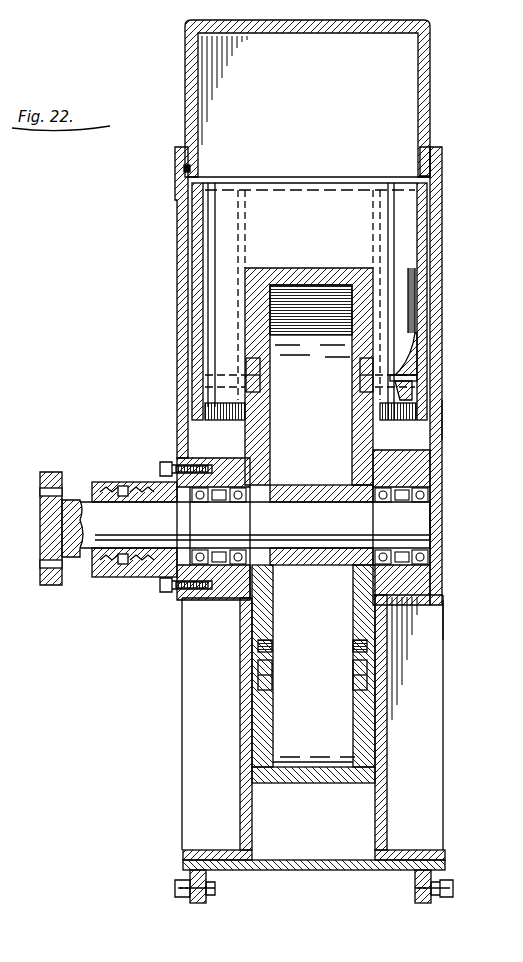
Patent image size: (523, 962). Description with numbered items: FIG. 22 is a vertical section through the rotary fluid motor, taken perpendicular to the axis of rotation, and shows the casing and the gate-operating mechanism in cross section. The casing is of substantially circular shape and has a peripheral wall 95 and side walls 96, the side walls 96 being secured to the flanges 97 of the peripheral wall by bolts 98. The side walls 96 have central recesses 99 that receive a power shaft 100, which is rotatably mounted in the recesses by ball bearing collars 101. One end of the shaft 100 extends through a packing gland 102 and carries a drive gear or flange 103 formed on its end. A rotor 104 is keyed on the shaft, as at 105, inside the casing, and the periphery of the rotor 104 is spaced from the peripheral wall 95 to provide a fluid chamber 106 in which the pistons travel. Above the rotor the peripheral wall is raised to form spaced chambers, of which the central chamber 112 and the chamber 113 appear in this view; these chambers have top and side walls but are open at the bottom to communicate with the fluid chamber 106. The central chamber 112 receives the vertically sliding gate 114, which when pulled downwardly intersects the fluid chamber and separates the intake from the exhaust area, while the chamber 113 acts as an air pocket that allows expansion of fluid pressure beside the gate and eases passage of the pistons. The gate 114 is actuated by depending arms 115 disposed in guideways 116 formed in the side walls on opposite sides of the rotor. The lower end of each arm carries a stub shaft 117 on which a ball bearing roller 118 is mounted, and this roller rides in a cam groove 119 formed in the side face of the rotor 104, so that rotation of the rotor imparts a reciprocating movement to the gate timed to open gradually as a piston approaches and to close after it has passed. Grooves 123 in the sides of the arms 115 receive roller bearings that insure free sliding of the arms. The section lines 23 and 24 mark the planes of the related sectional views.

The section line 23 is at (145, 193).
The section line 24 is at (148, 381).
The peripheral wall 95 is at (323, 872).
The side walls 96 is at (385, 760).
The flanges 97 is at (427, 903).
The bolts 98 is at (456, 882).
The central recesses 99 is at (420, 480).
The power shaft 100 is at (403, 523).
The ball bearing collars 101 is at (426, 556).
The packing gland 102 is at (120, 578).
The drive gear or flange 103 is at (48, 588).
The rotor 104 is at (378, 727).
The key 105 is at (320, 562).
The fluid chamber 106 is at (265, 812).
The central chamber 112 is at (405, 115).
The chamber 113 is at (482, 420).
The vertically sliding gate 114 is at (358, 240).
The depending arms 115 is at (415, 272).
The guideways 116 is at (192, 424).
The stub shaft 117 is at (483, 620).
The ball bearing roller 118 is at (358, 378).
The cam groove 119 is at (382, 680).
The grooves 123 is at (395, 312).